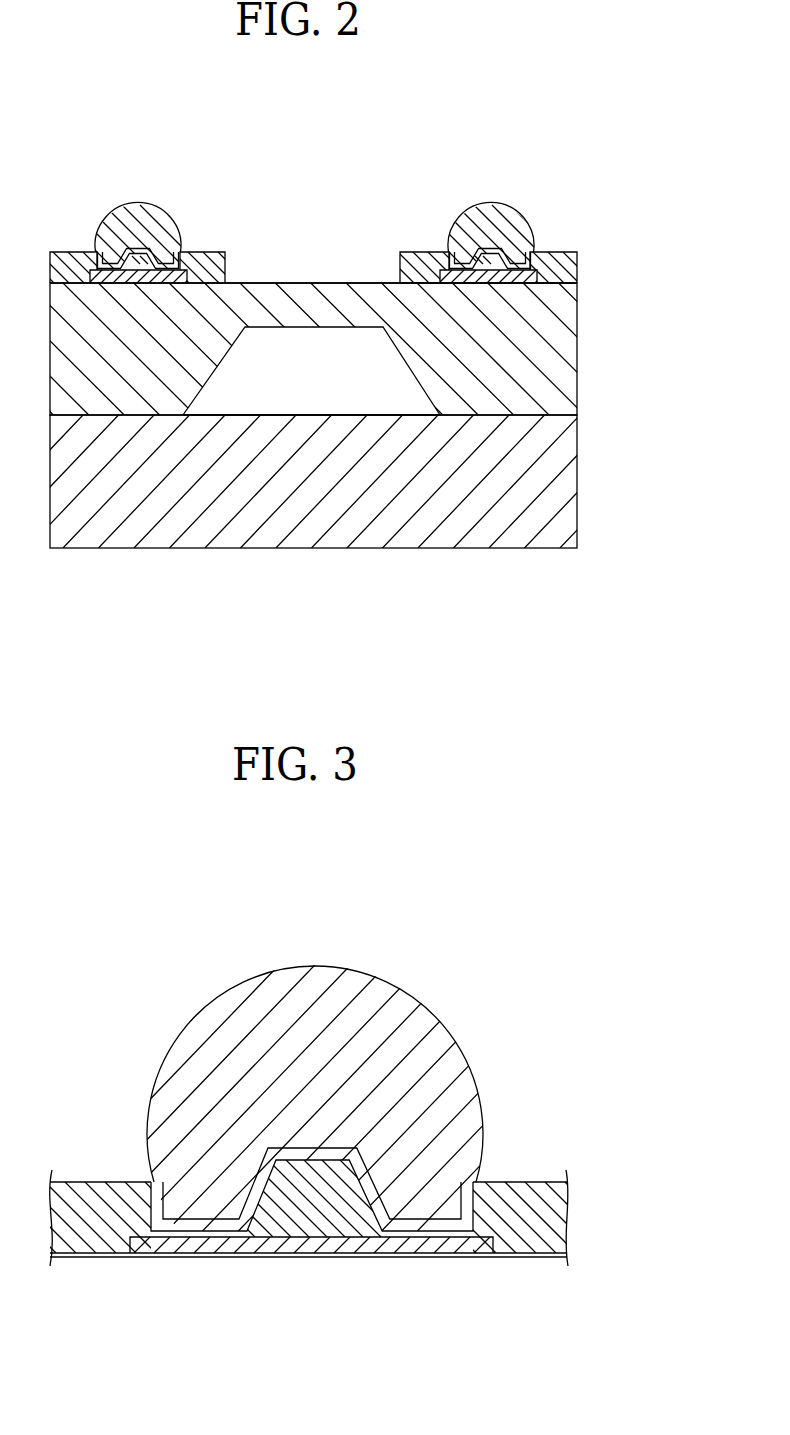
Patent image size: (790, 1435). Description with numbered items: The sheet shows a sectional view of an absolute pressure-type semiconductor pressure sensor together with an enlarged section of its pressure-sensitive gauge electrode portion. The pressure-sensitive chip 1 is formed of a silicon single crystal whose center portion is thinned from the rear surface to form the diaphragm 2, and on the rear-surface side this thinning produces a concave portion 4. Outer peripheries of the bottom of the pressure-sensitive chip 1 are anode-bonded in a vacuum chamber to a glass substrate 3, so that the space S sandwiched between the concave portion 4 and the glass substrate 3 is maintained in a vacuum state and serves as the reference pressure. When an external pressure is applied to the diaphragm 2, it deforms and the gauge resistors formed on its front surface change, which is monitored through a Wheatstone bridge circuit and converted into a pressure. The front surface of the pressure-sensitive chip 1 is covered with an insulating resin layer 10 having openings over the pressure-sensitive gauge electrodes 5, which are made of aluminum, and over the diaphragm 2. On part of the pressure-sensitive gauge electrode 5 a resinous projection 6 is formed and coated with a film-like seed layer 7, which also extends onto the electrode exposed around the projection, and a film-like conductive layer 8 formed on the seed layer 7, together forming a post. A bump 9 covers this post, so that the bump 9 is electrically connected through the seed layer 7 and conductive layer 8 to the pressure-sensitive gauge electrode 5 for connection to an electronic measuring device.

In FIG. 2, the pressure-sensitive chip 1 is at (563, 367).
In FIG. 2, the diaphragm 2 is at (303, 288).
In FIG. 2, the glass substrate 3 is at (565, 484).
In FIG. 2, the concave portion 4 is at (347, 328).
In FIG. 2, the pressure-sensitive gauge electrode 5 is at (515, 287).
In FIG. 3, the pressure-sensitive gauge electrode 5 is at (457, 1258).
In FIG. 2, the resinous projection 6 is at (456, 263).
In FIG. 3, the resinous projection 6 is at (305, 1238).
In FIG. 3, the seed layer 7 is at (363, 1176).
In FIG. 2, the conductive layer 8 is at (527, 228).
In FIG. 3, the conductive layer 8 is at (337, 1147).
In FIG. 2, the bump 9 is at (498, 207).
In FIG. 3, the bump 9 is at (164, 1062).
In FIG. 2, the insulating resin layer 10 is at (578, 263).
In FIG. 3, the insulating resin layer 10 is at (568, 1228).
In FIG. 2, the space S is at (278, 400).